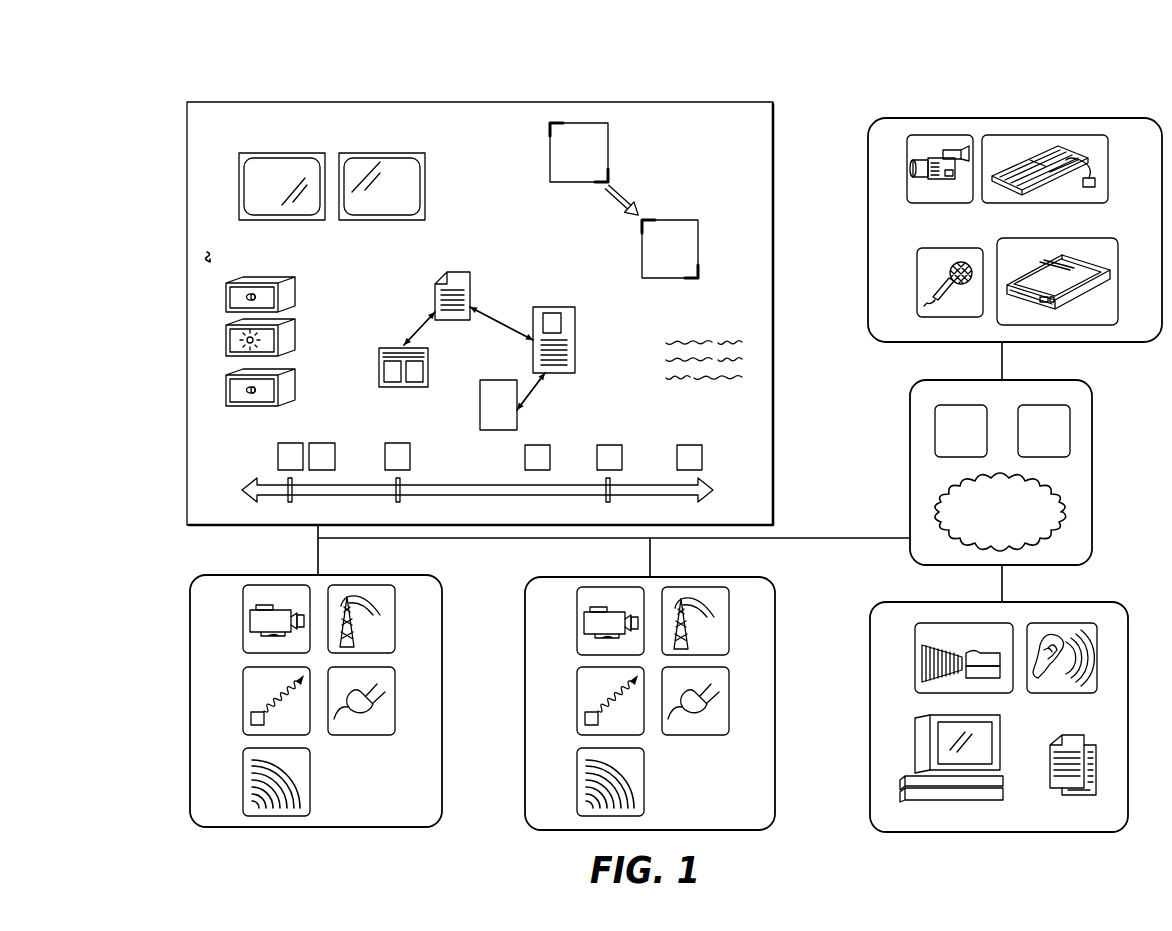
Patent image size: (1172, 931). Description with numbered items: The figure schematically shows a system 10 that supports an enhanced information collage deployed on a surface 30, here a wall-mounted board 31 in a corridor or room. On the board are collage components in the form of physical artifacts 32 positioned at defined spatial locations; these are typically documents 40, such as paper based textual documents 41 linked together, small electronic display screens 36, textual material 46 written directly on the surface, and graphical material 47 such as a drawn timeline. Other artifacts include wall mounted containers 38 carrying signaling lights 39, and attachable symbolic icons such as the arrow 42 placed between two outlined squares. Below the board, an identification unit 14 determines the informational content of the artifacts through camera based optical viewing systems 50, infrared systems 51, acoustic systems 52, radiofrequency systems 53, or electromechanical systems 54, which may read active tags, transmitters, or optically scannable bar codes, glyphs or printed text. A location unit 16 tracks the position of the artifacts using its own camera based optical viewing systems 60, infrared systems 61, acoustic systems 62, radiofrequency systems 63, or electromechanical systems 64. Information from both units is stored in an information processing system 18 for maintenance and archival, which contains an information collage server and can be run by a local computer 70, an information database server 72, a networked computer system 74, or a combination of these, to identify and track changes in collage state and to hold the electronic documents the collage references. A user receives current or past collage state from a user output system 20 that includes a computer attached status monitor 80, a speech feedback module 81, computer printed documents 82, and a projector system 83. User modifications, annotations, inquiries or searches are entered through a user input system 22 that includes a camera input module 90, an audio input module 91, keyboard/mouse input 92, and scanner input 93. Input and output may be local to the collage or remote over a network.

The system 10 is at (125, 88).
The identification unit 14 is at (190, 787).
The location unit 16 is at (525, 789).
The information processing system 18 is at (910, 450).
The user output system 20 is at (870, 632).
The user input system 22 is at (868, 255).
The surface 30 is at (186, 442).
The board 31 is at (204, 257).
The physical artifacts 32 is at (352, 152).
The small electronic display screens 36 is at (318, 220).
The wall mounted containers 38 is at (292, 343).
The signaling lights 39 is at (238, 342).
The documents 40 is at (505, 269).
The paper based textual documents 41 is at (447, 272).
The arrow 42 is at (630, 194).
The textual material 46 is at (709, 323).
The graphical material 47 is at (249, 490).
The camera based optical viewing systems 50 is at (240, 632).
The infrared systems 51 is at (240, 713).
The acoustic systems 52 is at (310, 799).
The radiofrequency systems 53 is at (400, 632).
The electromechanical systems 54 is at (363, 735).
The camera based optical viewing systems 60 is at (573, 634).
The infrared systems 61 is at (573, 715).
The acoustic systems 62 is at (644, 800).
The radiofrequency systems 63 is at (734, 634).
The electromechanical systems 64 is at (696, 737).
The local computer 70 is at (971, 441).
The information database server 72 is at (1054, 441).
The networked computer system 74 is at (1010, 520).
The computer attached status monitor 80 is at (912, 742).
The computer controlled speech feedback module 81 is at (1050, 693).
The computer printed documents 82 is at (1065, 795).
The projector system 83 is at (915, 672).
The camera input module 90 is at (905, 180).
The audio input module 91 is at (915, 278).
The keyboard/mouse input 92 is at (1108, 180).
The scanner input 93 is at (1118, 300).